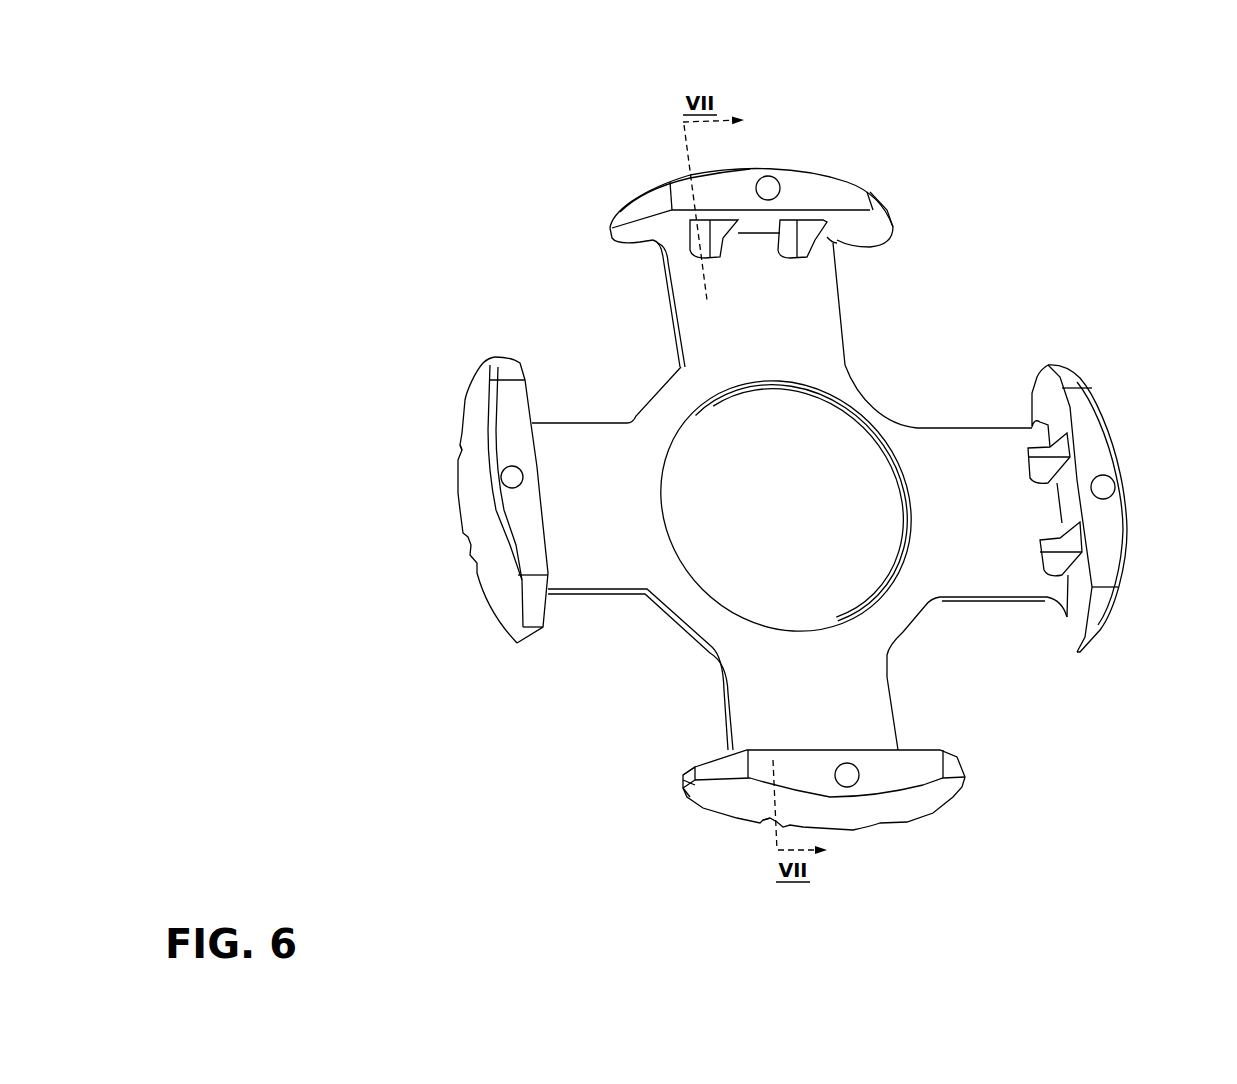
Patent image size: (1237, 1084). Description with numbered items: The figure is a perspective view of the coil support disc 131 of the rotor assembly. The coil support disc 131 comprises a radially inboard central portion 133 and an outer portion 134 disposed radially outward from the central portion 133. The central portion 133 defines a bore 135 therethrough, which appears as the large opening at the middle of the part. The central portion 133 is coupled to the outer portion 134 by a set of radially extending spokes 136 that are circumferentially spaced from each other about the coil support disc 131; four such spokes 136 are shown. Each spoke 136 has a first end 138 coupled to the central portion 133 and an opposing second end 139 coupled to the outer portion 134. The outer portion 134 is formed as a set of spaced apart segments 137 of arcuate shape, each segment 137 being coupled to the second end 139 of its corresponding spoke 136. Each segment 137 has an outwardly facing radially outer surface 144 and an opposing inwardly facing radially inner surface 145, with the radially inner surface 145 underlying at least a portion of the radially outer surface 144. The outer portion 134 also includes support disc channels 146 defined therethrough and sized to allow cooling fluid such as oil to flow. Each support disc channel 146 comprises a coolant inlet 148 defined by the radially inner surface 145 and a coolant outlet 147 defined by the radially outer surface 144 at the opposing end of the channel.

The coil support disc 131 is at (560, 100).
The central portion 133 is at (628, 364).
The outer portion 134 is at (610, 176).
The bore 135 is at (718, 487).
The spokes 136 is at (663, 303).
The segments 137 is at (830, 197).
The first end 138 is at (852, 669).
The second end 139 is at (676, 748).
The radially outer surface 144 is at (478, 521).
The radially inner surface 145 is at (858, 233).
The support disc channels 146 is at (665, 303).
The coolant outlet 147 is at (443, 460).
The coolant inlet 148 is at (740, 228).